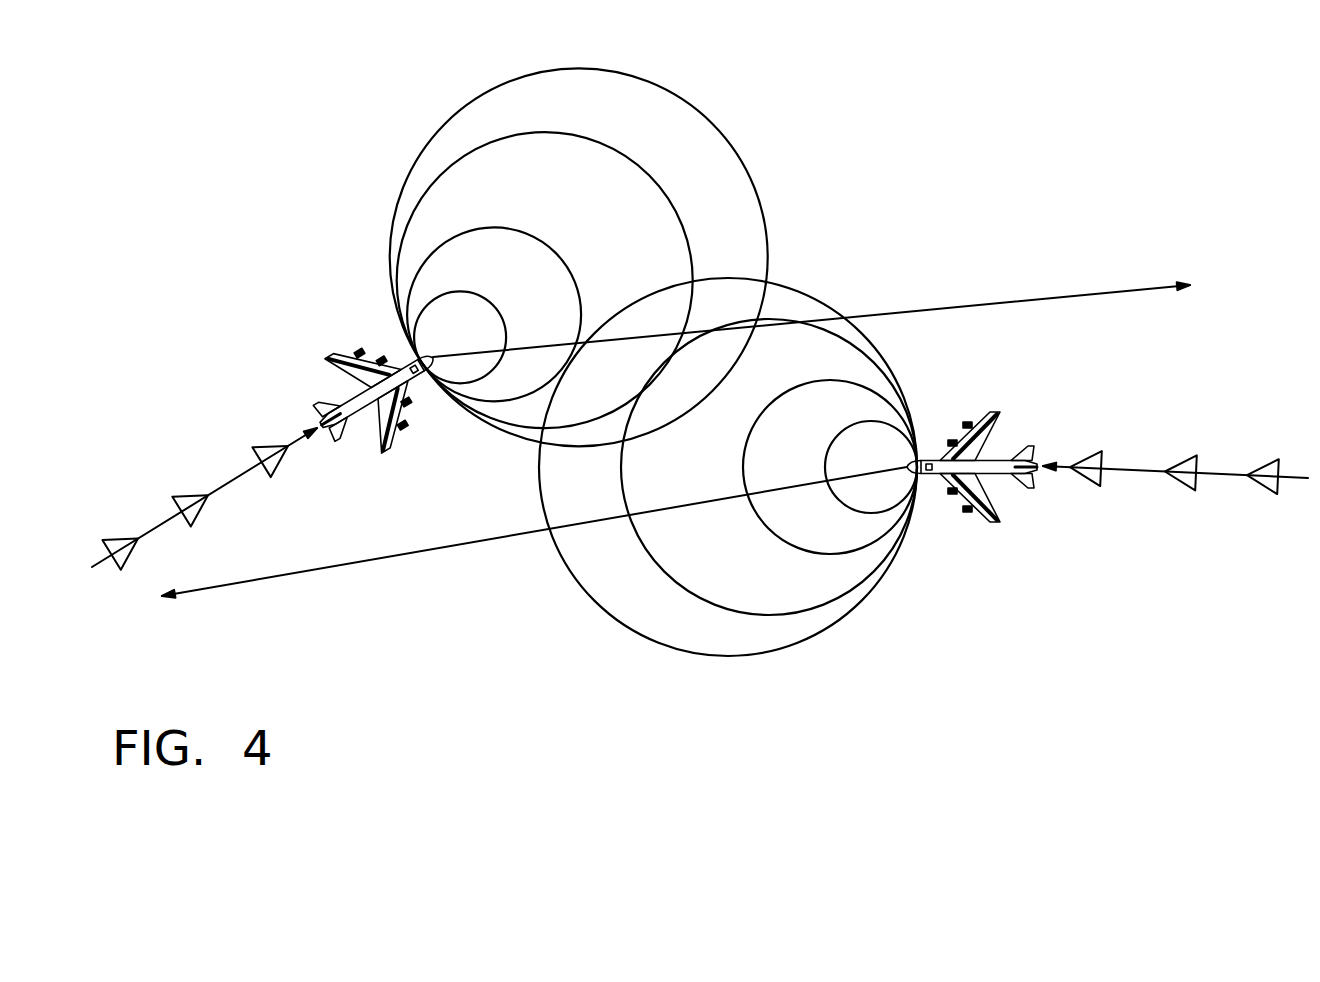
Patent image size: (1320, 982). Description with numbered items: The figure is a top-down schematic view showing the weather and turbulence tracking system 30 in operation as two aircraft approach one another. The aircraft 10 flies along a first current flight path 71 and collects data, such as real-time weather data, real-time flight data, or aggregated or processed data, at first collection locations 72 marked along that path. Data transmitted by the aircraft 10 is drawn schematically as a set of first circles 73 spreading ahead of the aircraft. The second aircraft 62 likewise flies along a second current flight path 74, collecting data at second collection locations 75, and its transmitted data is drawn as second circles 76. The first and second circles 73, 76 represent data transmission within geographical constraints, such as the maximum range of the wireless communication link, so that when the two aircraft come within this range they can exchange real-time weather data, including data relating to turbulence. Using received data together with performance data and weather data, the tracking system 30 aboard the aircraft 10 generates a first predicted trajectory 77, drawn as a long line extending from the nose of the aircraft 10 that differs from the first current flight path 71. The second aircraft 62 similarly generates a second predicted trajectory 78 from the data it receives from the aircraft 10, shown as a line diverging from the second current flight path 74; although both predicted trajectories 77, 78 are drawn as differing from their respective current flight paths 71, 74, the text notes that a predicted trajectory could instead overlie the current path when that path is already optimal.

The aircraft 10 is at (312, 333).
The weather and turbulence tracking system 30 is at (406, 380).
The second aircraft 62 is at (1013, 553).
The first current flight path 71 is at (240, 470).
The first collection locations 72 is at (193, 493).
The first circles 73 is at (655, 80).
The second current flight path 74 is at (1137, 468).
The second collection locations 75 is at (1083, 458).
The second circles 76 is at (800, 293).
The first predicted trajectory 77 is at (973, 307).
The second predicted trajectory 78 is at (320, 568).